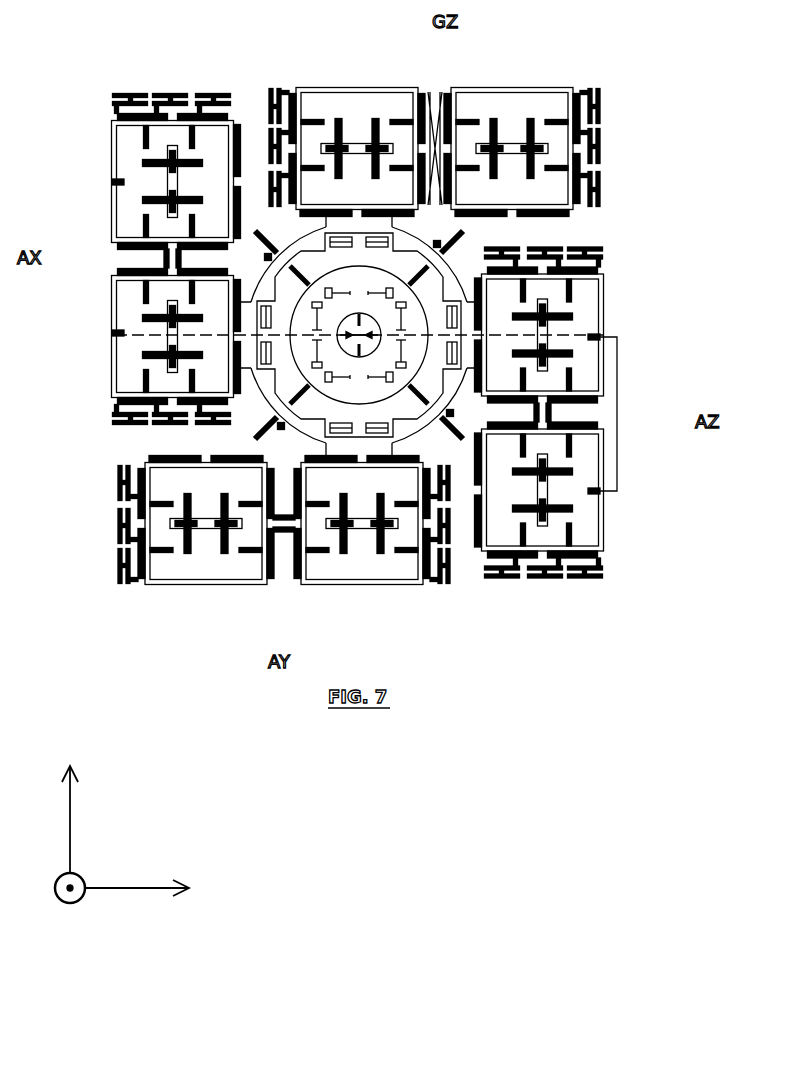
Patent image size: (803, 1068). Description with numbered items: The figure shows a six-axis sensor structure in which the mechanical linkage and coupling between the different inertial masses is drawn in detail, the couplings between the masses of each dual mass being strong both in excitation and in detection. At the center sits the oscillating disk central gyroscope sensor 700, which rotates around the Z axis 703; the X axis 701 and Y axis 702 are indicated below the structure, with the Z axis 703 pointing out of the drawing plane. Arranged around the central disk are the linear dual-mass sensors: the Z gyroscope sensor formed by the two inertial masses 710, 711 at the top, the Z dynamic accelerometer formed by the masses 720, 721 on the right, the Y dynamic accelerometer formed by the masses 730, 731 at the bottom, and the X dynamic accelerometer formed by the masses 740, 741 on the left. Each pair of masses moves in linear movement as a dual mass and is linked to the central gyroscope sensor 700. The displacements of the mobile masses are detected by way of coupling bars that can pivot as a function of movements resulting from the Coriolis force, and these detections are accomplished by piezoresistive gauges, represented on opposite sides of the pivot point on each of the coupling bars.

The central gyroscope sensor GXY 700 is at (357, 336).
The X axis 701 is at (141, 913).
The Y axis 702 is at (50, 819).
The Z axis 703 is at (53, 910).
The first inertial mass of gyroscope sensor GZ 710 is at (440, 75).
The second inertial mass of gyroscope sensor GZ 711 is at (538, 98).
The first inertial mass of dynamic accelerometer AZ 720 is at (588, 323).
The second inertial mass of dynamic accelerometer AZ 721 is at (588, 506).
The first inertial mass of dynamic accelerometer AY 730 is at (395, 578).
The second inertial mass of dynamic accelerometer AY 731 is at (286, 597).
The first inertial mass of dynamic accelerometer AX 740 is at (127, 352).
The second inertial mass of dynamic accelerometer AX 741 is at (99, 262).